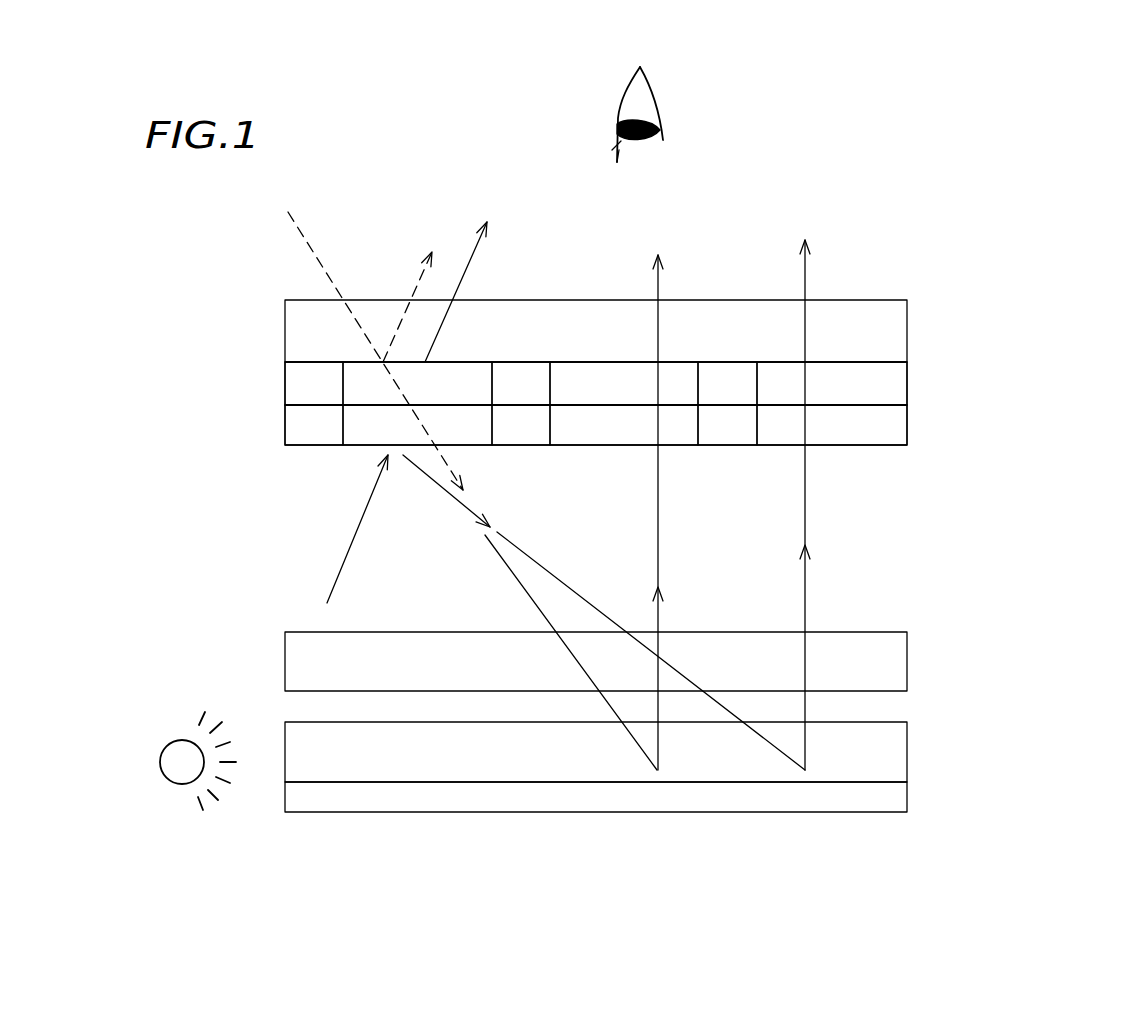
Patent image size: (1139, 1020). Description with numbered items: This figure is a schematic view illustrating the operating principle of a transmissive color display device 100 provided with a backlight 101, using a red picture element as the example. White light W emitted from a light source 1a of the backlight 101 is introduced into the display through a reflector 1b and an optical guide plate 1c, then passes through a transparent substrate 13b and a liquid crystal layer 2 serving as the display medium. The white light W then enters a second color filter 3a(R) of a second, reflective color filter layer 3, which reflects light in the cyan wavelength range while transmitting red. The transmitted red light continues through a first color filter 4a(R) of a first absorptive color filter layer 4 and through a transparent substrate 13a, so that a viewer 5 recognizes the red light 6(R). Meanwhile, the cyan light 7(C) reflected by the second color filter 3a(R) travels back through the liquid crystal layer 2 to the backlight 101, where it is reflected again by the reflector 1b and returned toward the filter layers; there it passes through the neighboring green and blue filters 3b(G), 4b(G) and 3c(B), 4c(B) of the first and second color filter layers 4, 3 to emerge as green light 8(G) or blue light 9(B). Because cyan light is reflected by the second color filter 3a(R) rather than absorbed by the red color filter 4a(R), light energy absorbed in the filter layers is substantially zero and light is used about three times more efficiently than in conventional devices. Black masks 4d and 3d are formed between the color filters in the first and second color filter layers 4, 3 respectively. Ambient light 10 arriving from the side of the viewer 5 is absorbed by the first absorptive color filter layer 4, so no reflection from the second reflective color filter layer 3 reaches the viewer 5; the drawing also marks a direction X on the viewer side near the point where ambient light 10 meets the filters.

The light source 1a is at (178, 773).
The reflector 1b is at (665, 800).
The optical guide plate 1c is at (603, 765).
The liquid crystal layer 2 is at (863, 560).
The second reflective color filter layer 3 is at (908, 426).
The second color filter (red) 3a is at (417, 425).
The second color filter (green) 3b is at (624, 425).
The second color filter (blue) 3c is at (832, 425).
The black mask 3d is at (285, 428).
The first absorptive color filter layer 4 is at (908, 380).
The first color filter (red) 4a is at (417, 383).
The first color filter (green) 4b is at (624, 383).
The first color filter (blue) 4c is at (832, 383).
The black mask 4d is at (285, 383).
The viewer 5 is at (618, 113).
The red light 6 is at (471, 276).
The cyan light 7 is at (515, 573).
The green light 8 is at (661, 495).
The blue light 9 is at (808, 492).
The ambient light 10 is at (365, 336).
The transparent substrate 13a is at (903, 330).
The transparent substrate 13b is at (643, 661).
The transmissive color display device 100 is at (652, 473).
The backlight 101 is at (636, 792).
The white light W is at (338, 572).
The reflected light X is at (412, 290).